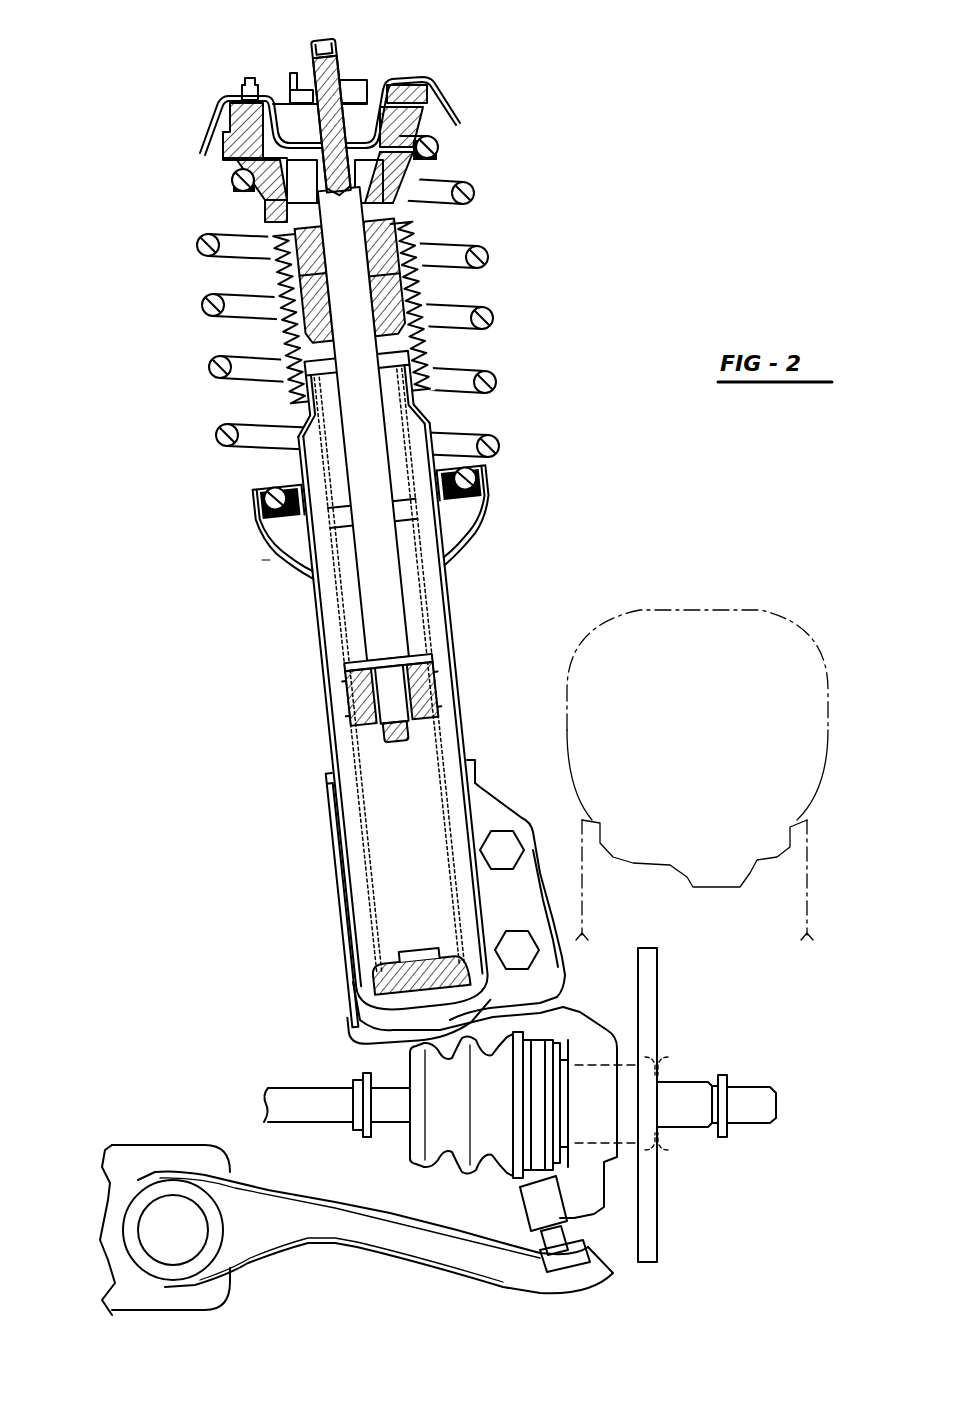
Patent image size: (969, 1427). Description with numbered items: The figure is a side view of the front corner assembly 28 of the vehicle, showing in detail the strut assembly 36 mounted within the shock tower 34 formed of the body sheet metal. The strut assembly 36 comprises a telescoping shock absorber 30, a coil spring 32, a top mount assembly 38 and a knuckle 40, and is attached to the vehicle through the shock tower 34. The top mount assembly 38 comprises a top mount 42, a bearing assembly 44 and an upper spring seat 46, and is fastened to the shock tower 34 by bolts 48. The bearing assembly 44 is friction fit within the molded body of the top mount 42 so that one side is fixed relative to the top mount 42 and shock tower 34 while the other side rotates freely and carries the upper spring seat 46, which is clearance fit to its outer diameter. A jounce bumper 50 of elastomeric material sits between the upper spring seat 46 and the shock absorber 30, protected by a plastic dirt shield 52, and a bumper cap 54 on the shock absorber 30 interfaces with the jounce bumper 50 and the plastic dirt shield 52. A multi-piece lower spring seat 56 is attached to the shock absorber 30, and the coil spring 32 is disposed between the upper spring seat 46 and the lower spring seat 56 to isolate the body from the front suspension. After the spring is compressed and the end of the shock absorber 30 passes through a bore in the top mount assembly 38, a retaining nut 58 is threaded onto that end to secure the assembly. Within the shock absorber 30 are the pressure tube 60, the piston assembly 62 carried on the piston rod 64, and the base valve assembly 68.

The front corner assembly 28 is at (672, 168).
The shock absorber 30 is at (322, 694).
The coil spring 32 is at (473, 187).
The shock tower 34 is at (460, 118).
The strut assembly 36 is at (266, 571).
The top mount assembly 38 is at (414, 60).
The knuckle 40 is at (577, 1013).
The top mount 42 is at (228, 118).
The bearing assembly 44 is at (410, 100).
The upper spring seat 46 is at (275, 205).
The bolts 48 is at (242, 86).
The jounce bumper 50 is at (392, 282).
The plastic dirt shield 52 is at (413, 342).
The bumper cap 54 is at (413, 392).
The lower spring seat 56 is at (482, 510).
The retaining nut 58 is at (341, 77).
The pressure tube 60 is at (437, 613).
The piston assembly 62 is at (437, 690).
The piston rod 64 is at (380, 590).
The base valve assembly 68 is at (417, 968).